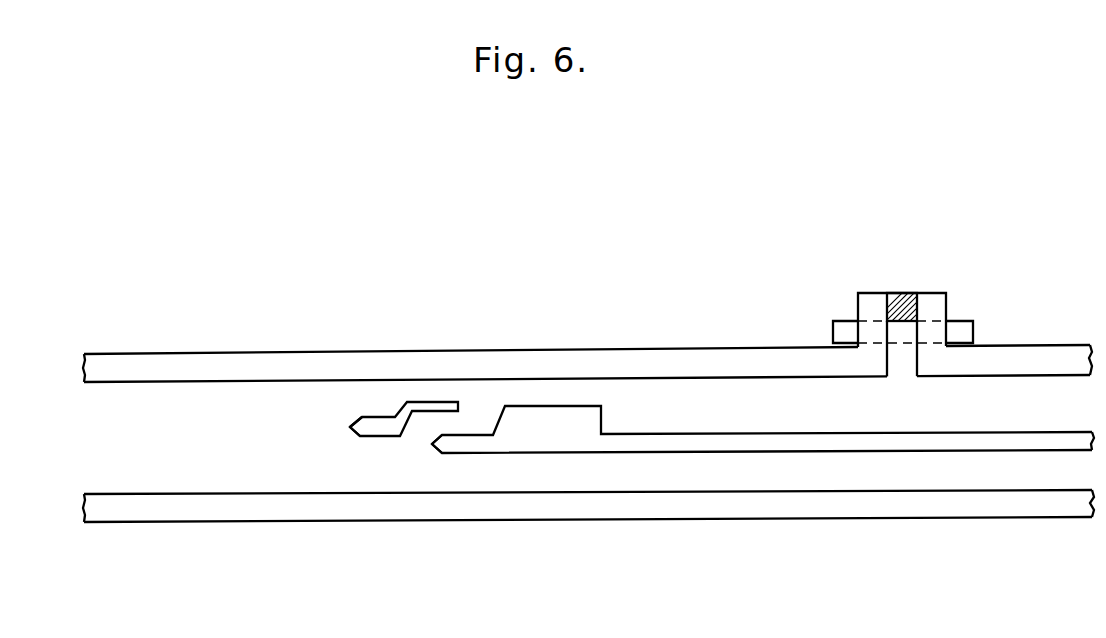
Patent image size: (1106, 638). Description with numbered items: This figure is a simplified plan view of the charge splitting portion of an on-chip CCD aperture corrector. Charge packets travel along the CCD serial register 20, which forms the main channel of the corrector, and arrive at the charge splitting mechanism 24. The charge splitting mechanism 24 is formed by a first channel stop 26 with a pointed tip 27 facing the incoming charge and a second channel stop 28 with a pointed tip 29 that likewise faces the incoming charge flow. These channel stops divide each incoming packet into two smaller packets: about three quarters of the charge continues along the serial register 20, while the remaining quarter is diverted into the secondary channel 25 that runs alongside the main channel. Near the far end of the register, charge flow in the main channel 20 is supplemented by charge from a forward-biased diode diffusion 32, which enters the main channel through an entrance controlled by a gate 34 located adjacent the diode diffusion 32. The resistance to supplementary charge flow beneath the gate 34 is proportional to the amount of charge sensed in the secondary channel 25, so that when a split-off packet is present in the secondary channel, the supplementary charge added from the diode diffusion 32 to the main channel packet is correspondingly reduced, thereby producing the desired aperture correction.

The CCD serial register 20 is at (317, 392).
The charge splitting mechanism 24 is at (594, 319).
The secondary channel 25 is at (730, 482).
The first channel stop 26 is at (366, 414).
The pointed tip 27 is at (352, 436).
The second channel stop 28 is at (465, 434).
The pointed tip 29 is at (432, 445).
The diode diffusion 32 is at (915, 292).
The gate 34 is at (833, 320).